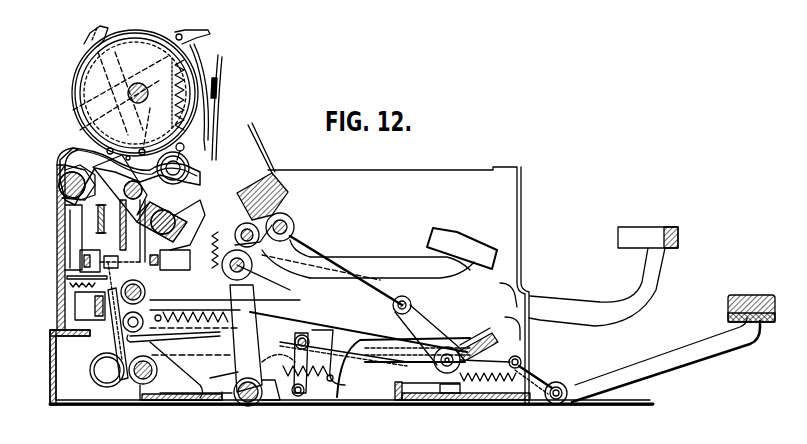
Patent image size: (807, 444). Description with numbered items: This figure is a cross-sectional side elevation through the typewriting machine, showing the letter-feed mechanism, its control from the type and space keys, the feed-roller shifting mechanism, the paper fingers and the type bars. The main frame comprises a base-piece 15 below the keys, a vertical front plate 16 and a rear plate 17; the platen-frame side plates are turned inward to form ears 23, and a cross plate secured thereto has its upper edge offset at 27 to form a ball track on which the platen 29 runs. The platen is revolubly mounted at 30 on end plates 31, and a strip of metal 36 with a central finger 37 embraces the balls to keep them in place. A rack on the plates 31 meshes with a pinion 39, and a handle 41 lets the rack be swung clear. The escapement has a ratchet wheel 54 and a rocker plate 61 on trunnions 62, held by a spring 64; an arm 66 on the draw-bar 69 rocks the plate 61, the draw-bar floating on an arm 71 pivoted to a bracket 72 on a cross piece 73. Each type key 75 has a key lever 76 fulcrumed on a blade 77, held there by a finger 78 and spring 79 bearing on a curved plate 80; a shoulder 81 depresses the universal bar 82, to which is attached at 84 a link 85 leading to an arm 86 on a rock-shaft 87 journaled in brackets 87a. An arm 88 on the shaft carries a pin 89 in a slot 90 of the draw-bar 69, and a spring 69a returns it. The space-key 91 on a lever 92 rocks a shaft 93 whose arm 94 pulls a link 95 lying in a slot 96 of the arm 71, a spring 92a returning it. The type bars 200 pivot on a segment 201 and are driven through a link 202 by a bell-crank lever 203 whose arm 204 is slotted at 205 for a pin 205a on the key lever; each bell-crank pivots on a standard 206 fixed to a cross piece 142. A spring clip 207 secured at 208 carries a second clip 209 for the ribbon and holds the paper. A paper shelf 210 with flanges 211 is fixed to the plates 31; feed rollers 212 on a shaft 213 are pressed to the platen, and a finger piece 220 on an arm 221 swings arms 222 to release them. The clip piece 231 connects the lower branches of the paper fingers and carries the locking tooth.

The base-piece 15 is at (345, 406).
The vertical front plate 16 is at (521, 216).
The rear plate 17 is at (50, 365).
The ears 23 is at (258, 246).
The offset 27 is at (64, 184).
The platen 29 is at (143, 31).
The platen journal 30 is at (146, 88).
The plates 31 is at (80, 142).
The strip of metal 36 is at (58, 166).
The finger 37 is at (171, 213).
The pinion 39 is at (98, 222).
The handle 41 is at (139, 132).
The ratchet wheel 54 is at (95, 305).
The plate 61 is at (112, 330).
The trunnions 62 is at (66, 215).
The spring 64 is at (66, 287).
The arm 66 is at (80, 262).
The draw-bar or link 69 is at (202, 310).
The spring 69a is at (191, 307).
The arm 71 is at (150, 350).
The bracket 72 is at (178, 345).
The cross piece 73 is at (170, 400).
The type keys 75 is at (642, 226).
The type key lever 76 is at (566, 308).
The blade 77 is at (143, 306).
The finger 78 is at (403, 367).
The spring 79 is at (314, 363).
The curved plate 80 is at (262, 345).
The shoulder 81 is at (405, 344).
The universal bar 82 is at (415, 375).
The attachment point 84 is at (304, 336).
The link 85 is at (300, 396).
The arm 86 is at (272, 395).
The rock-shaft 87 is at (240, 396).
The brackets 87a is at (215, 398).
The arm 88 is at (358, 335).
The pin 89 is at (225, 289).
The slot 90 is at (269, 280).
The space-key 91 is at (750, 298).
The lever 92 is at (672, 350).
The spring 92a is at (488, 384).
The rock-shaft 93 is at (562, 384).
The arm 94 is at (540, 375).
The link 95 is at (491, 353).
The slot 96 is at (107, 370).
The cross piece 142 is at (462, 398).
The type bars 200 is at (362, 262).
The segment 201 is at (262, 150).
The link 202 is at (402, 300).
The bell-crank lever 203 is at (429, 330).
The arm 204 is at (482, 336).
The slot 205 is at (450, 347).
The pin 205a is at (501, 311).
The standard 206 is at (435, 400).
The spring clip 207 is at (203, 58).
The securing point 208 is at (184, 252).
The second clip 209 is at (220, 86).
The paper shelf and guide 210 is at (90, 150).
The upturned flanges 211 is at (76, 150).
The feed rollers 212 is at (190, 157).
The shaft 213 is at (190, 167).
The finger piece 220 is at (100, 28).
The arm 221 is at (121, 99).
The arm 222 is at (168, 101).
The piece 231 is at (236, 196).